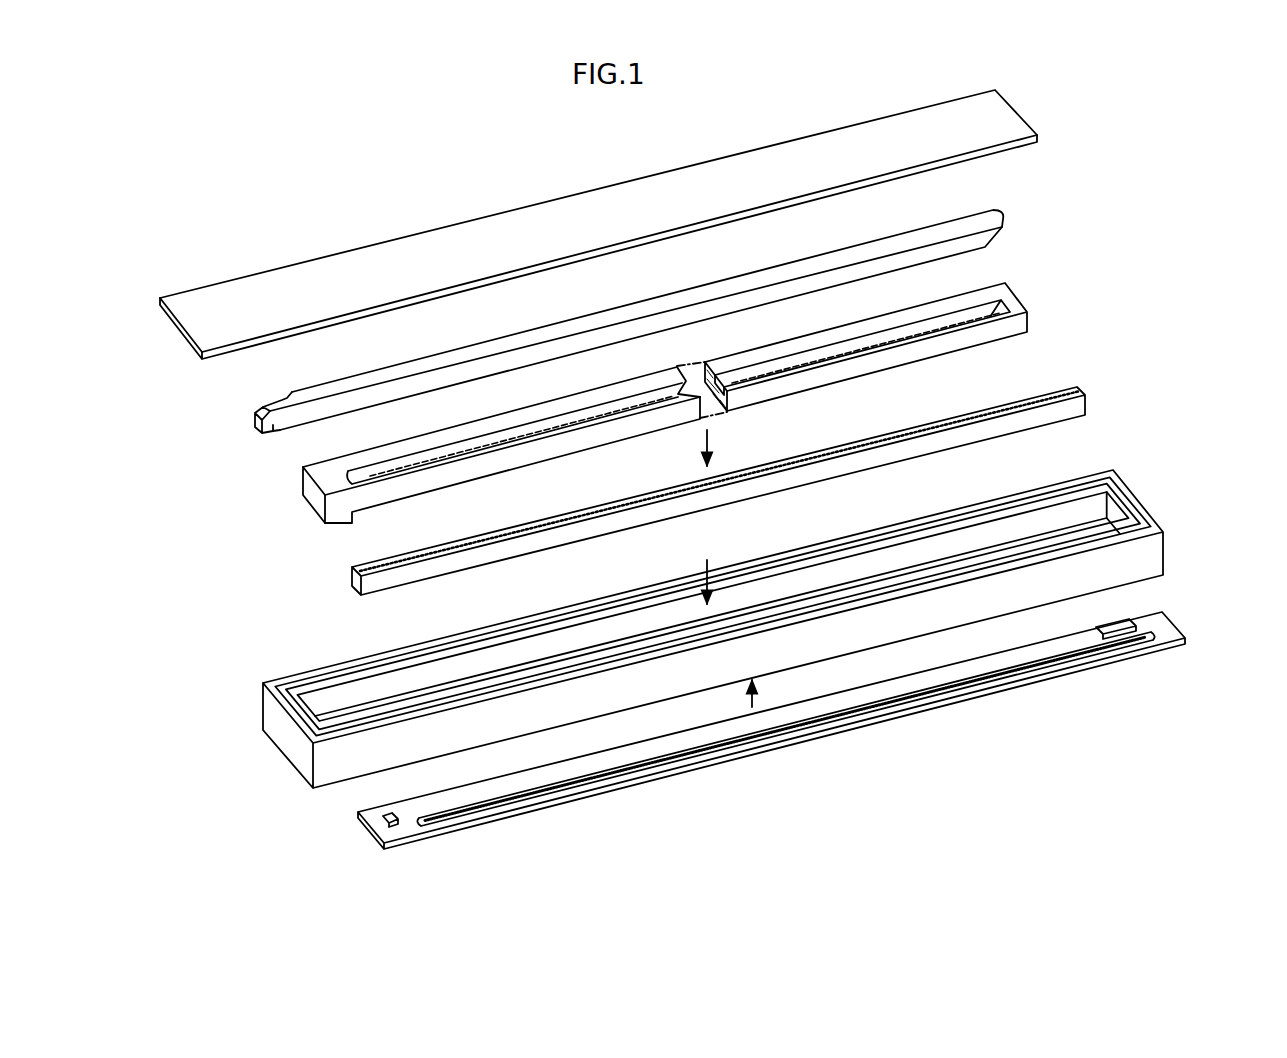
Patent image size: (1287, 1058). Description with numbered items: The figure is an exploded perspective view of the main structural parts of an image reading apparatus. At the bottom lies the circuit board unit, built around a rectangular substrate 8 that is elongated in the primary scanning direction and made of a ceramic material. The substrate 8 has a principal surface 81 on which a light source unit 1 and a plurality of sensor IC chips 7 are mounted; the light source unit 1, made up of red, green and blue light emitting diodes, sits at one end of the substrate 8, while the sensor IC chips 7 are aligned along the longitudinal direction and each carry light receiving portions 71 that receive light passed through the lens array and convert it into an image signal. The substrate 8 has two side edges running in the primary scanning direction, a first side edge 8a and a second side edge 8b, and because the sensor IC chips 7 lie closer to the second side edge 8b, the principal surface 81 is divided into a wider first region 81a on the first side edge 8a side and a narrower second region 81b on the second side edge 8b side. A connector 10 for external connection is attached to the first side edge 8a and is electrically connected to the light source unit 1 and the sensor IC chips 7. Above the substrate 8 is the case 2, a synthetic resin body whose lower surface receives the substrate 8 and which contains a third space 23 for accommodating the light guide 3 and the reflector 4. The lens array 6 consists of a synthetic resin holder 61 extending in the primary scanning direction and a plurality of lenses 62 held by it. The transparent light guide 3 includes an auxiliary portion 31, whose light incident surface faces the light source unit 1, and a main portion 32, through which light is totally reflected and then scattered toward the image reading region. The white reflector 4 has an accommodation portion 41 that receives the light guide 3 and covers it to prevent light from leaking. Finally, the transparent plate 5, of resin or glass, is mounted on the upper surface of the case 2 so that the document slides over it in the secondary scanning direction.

The light source unit 1 is at (376, 826).
The case 2 is at (704, 647).
The light guide 3 is at (648, 353).
The reflector 4 is at (703, 403).
The transparent plate 5 is at (198, 320).
The lens array 6 is at (686, 490).
The sensor IC chips 7 is at (613, 783).
The substrate 8 is at (771, 589).
The first side edge 8a is at (828, 692).
The second side edge 8b is at (848, 734).
The connector 10 is at (1133, 618).
The third space 23 is at (516, 657).
The auxiliary portion 31 is at (270, 436).
The main portion 32 is at (603, 318).
The accommodation portion 41 is at (487, 440).
The holder 61 is at (962, 440).
The lenses 62 is at (957, 420).
The light receiving portions 71 is at (483, 793).
The principal surface 81 is at (772, 777).
The first region 81a is at (700, 735).
The second region 81b is at (700, 760).